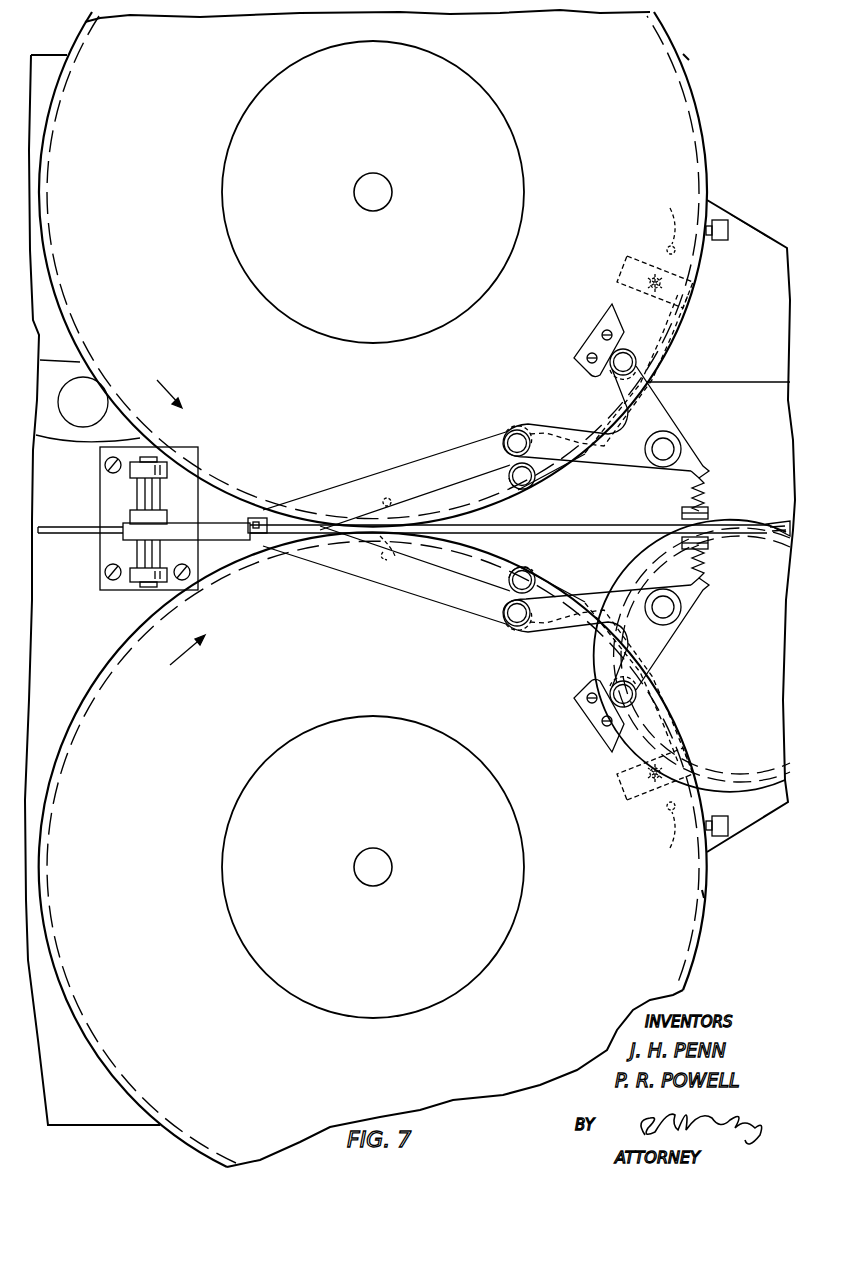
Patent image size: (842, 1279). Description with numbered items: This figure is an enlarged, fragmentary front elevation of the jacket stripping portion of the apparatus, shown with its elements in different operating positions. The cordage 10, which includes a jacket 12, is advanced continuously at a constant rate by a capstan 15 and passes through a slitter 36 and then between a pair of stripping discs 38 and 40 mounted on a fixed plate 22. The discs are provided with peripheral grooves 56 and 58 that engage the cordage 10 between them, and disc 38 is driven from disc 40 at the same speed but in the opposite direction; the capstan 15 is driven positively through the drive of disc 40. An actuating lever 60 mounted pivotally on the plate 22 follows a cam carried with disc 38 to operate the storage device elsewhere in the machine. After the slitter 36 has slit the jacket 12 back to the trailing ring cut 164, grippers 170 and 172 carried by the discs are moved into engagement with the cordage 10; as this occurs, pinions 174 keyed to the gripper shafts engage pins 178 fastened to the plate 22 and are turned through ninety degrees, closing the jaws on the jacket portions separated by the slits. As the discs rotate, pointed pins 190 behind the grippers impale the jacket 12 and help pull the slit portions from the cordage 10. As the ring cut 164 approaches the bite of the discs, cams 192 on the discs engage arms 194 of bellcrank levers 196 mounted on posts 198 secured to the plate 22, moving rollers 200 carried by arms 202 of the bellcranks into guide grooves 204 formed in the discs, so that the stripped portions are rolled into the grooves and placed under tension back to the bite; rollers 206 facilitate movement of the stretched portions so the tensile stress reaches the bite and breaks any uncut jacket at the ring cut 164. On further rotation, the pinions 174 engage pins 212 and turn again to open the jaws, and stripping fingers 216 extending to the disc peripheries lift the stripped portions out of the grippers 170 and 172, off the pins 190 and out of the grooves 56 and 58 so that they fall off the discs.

The cordage 10 is at (65, 537).
The jacket 12 is at (505, 452).
The capstan 15 is at (712, 698).
The fixed plate 22 is at (754, 241).
The slitter 36 is at (92, 493).
The stripping disc 38 is at (684, 88).
The stripping disc 40 is at (127, 647).
The peripheral groove 56 is at (673, 58).
The peripheral groove 58 is at (702, 895).
The actuating lever 60 is at (763, 522).
The ring cut 164 is at (390, 547).
The gripper 170 is at (623, 256).
The gripper 172 is at (614, 797).
The pinion 174 is at (657, 293).
The pin 178 is at (394, 502).
The pointed pin 190 is at (616, 411).
The cam 192 is at (595, 333).
The arm 194 is at (651, 400).
The bellcrank lever 196 is at (640, 470).
The post 198 is at (677, 448).
The roller 200 is at (505, 428).
The arm 202 is at (597, 463).
The guide groove 204 is at (404, 464).
The roller 206 is at (531, 487).
The pin 212 is at (650, 838).
The stripping finger 216 is at (722, 230).